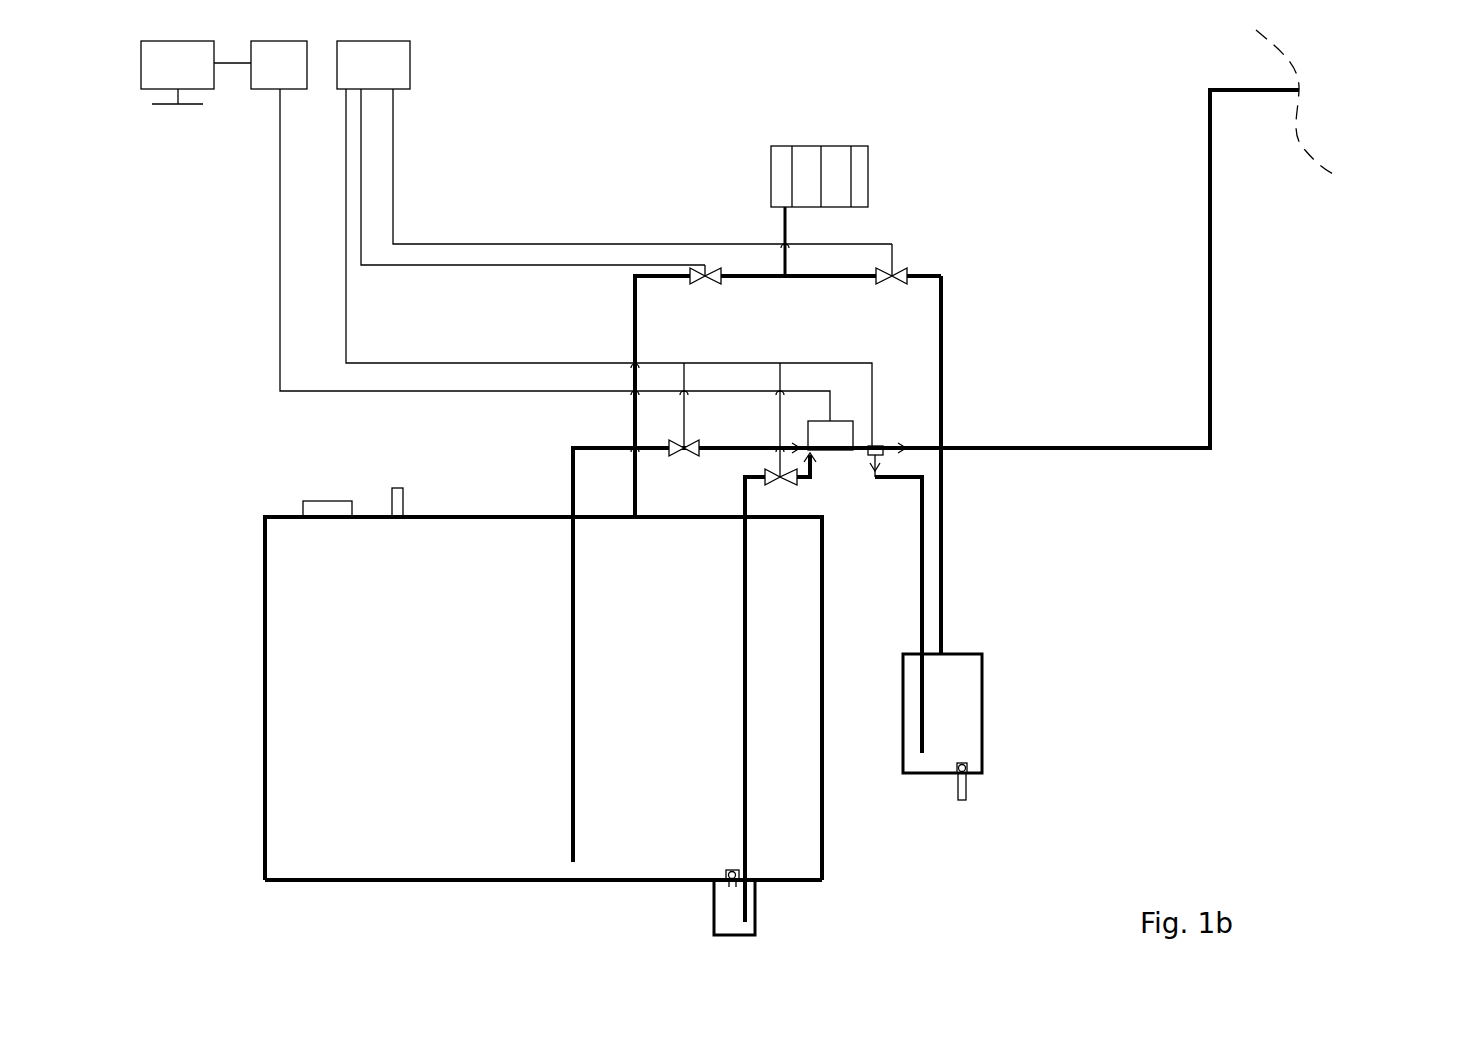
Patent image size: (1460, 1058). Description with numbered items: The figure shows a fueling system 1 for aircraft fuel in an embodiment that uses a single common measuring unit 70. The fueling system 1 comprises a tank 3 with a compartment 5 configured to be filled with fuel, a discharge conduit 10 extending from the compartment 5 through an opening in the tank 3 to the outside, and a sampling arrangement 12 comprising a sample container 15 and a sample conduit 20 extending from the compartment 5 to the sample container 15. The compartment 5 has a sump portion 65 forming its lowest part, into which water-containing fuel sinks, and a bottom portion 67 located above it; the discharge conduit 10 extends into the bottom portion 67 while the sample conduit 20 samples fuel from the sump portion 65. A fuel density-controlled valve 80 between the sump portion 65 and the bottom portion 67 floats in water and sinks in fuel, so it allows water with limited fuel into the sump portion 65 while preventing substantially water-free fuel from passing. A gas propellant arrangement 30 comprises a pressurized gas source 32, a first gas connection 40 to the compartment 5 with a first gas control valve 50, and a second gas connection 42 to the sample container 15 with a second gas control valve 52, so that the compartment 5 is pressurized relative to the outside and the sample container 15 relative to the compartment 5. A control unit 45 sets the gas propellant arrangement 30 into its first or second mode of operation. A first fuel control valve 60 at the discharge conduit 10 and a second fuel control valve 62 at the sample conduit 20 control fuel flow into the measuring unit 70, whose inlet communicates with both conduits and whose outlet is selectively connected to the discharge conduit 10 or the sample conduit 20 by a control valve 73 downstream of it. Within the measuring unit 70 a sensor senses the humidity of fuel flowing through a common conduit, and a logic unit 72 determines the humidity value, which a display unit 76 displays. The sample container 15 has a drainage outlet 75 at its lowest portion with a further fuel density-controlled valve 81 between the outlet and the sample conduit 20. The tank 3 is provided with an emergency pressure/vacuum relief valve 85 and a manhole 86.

The fueling system 1 is at (1318, 362).
The tank 3 is at (265, 785).
The compartment 5 is at (360, 698).
The discharge conduit 10 is at (573, 470).
The sampling arrangement 12 is at (960, 570).
The sample container 15 is at (982, 712).
The sample conduit 20 is at (923, 613).
The gas propellant arrangement 30 is at (928, 240).
The pressurized gas source 32 is at (862, 157).
The first gas connection 40 is at (635, 421).
The second gas connection 42 is at (945, 358).
The control unit 45 is at (410, 63).
The first gas control valve 50 is at (705, 282).
The second gas control valve 52 is at (892, 282).
The first fuel control valve 60 is at (684, 454).
The second fuel control valve 62 is at (780, 484).
The sump portion 65 is at (755, 905).
The bottom portion 67 is at (462, 866).
The measuring unit 70 is at (853, 421).
The logic unit 72 is at (260, 89).
The control valve 73 is at (883, 447).
The drainage outlet 75 is at (966, 787).
The display unit 76 is at (141, 65).
The fuel density-controlled valve 80 is at (740, 870).
The further fuel density-controlled valve 81 is at (967, 765).
The emergency pressure/vacuum relief valve 85 is at (397, 488).
The manhole 86 is at (328, 501).